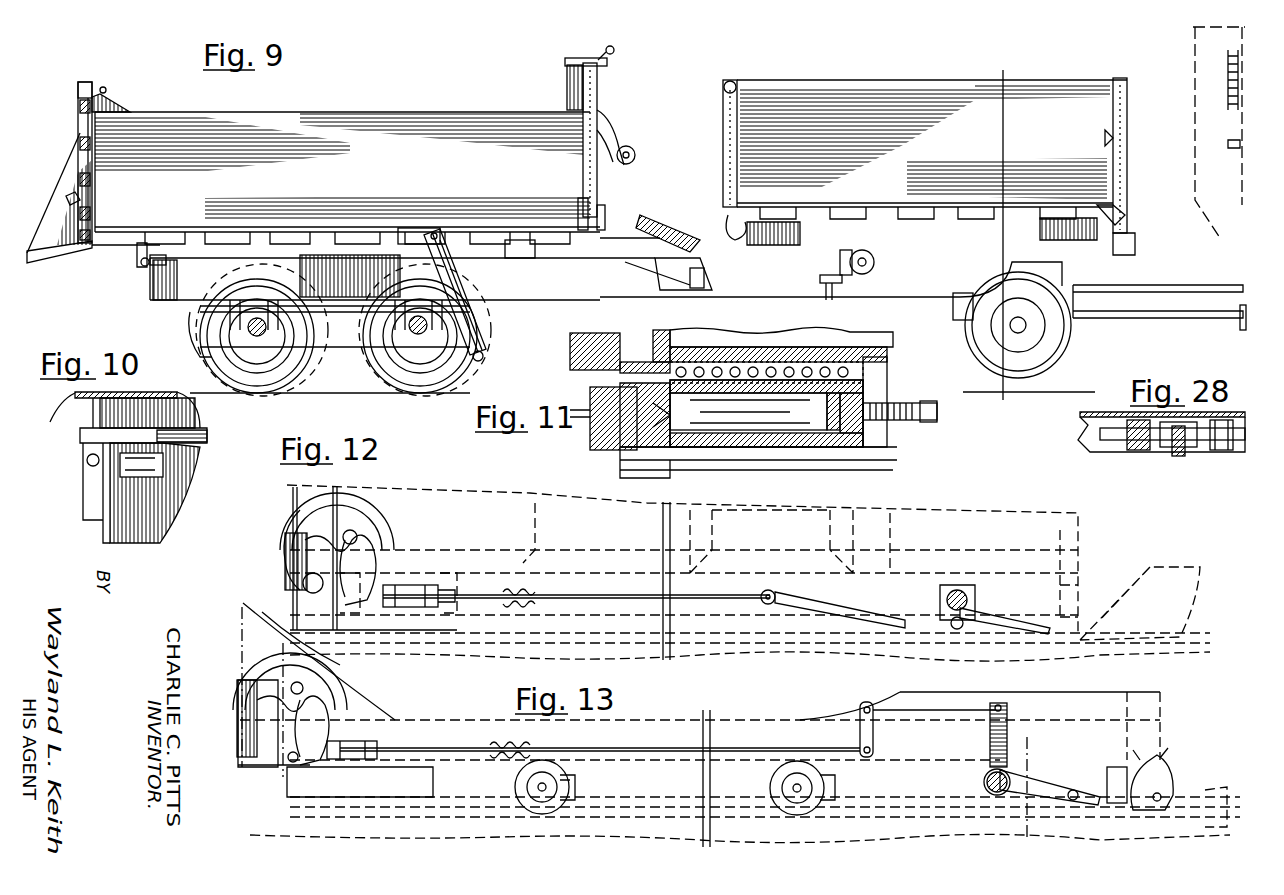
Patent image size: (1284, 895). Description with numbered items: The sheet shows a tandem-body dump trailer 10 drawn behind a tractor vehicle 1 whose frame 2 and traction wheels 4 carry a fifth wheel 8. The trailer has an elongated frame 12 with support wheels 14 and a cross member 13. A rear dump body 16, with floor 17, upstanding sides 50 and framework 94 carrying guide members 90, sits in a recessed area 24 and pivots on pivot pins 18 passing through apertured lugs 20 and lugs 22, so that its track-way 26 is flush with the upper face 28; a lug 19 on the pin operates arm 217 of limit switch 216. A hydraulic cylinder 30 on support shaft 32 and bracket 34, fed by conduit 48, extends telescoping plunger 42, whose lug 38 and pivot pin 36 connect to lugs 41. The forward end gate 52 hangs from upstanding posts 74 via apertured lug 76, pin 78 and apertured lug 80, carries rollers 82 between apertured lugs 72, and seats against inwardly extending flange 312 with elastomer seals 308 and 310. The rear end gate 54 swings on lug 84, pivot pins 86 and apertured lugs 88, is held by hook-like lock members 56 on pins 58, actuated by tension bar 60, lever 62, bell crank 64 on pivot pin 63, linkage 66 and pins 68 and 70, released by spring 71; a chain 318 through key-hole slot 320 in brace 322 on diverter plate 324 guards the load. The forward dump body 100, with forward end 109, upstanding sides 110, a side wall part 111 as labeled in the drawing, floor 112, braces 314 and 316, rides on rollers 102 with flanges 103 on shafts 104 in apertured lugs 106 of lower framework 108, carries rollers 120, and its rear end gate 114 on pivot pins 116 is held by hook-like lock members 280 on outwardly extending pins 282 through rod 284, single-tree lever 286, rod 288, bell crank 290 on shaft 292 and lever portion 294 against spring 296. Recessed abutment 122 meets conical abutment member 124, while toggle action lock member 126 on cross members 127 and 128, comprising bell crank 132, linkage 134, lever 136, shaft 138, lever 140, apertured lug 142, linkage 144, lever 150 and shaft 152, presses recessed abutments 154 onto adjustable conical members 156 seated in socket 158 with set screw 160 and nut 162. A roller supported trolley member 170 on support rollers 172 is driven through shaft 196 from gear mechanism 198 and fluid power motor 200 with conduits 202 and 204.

In FIG. 9, the tractor vehicle 1 is at (1190, 60).
In FIG. 9, the frame 2 is at (1178, 312).
In FIG. 9, the traction wheels 4 is at (975, 345).
In FIG. 9, the fifth wheel 8 is at (1050, 262).
In FIG. 9, the trailer 10 is at (787, 297).
In FIG. 10, the trailer 10 is at (173, 527).
In FIG. 12, the trailer 10 is at (1180, 565).
In FIG. 13, the trailer 10 is at (1187, 800).
In FIG. 9, the elongated frame 12 is at (603, 282).
In FIG. 10, the elongated frame 12 is at (153, 530).
In FIG. 12, the elongated frame 12 is at (1150, 648).
In FIG. 13, the elongated frame 12 is at (1085, 840).
In FIG. 9, the cross member 13 is at (1110, 225).
In FIG. 9, the support wheels 14 is at (372, 372).
In FIG. 9, the rear dump body 16 is at (497, 108).
In FIG. 10, the rear dump body 16 is at (203, 415).
In FIG. 12, the rear dump body 16 is at (1049, 514).
In FIG. 9, the floor 17 is at (185, 226).
In FIG. 10, the floor 17 is at (160, 395).
In FIG. 9, the pivot pins 18 is at (142, 263).
In FIG. 10, the pivot pins 18 is at (85, 459).
In FIG. 9, the lug 19 is at (144, 270).
In FIG. 10, the lug 19 is at (90, 468).
In FIG. 9, the apertured lugs 20 is at (138, 254).
In FIG. 10, the apertured lugs 20 is at (80, 443).
In FIG. 9, the lugs 22 is at (146, 280).
In FIG. 10, the lugs 22 is at (95, 475).
In FIG. 9, the recessed area 24 is at (320, 220).
In FIG. 12, the recessed area 24 is at (1050, 632).
In FIG. 9, the track-way 26 is at (640, 215).
In FIG. 12, the track-way 26 is at (1120, 565).
In FIG. 9, the upper face 28 is at (692, 226).
In FIG. 12, the upper face 28 is at (1205, 566).
In FIG. 13, the upper face 28 is at (1008, 742).
In FIG. 9, the hydraulic cylinder 30 is at (478, 322).
In FIG. 9, the support shaft 32 is at (481, 362).
In FIG. 9, the bracket 34 is at (488, 306).
In FIG. 9, the pivot pin 36 is at (455, 237).
In FIG. 9, the lug 38 is at (436, 232).
In FIG. 9, the lugs 41 is at (478, 258).
In FIG. 9, the telescoping plunger 42 is at (420, 228).
In FIG. 9, the conduit 48 is at (488, 342).
In FIG. 9, the upstanding sides 50 is at (386, 108).
In FIG. 12, the upstanding sides 50 is at (990, 513).
In FIG. 9, the forward end gate 52 is at (598, 86).
In FIG. 9, the rear end gate 54 is at (78, 136).
In FIG. 12, the rear end gate 54 is at (340, 482).
In FIG. 9, the hook-like lock members 56 is at (62, 232).
In FIG. 12, the hook-like lock members 56 is at (290, 560).
In FIG. 12, the pins 58 is at (305, 584).
In FIG. 12, the tension bar 60 is at (585, 596).
In FIG. 12, the lever 62 is at (990, 610).
In FIG. 12, the pivot pin 63 is at (950, 592).
In FIG. 12, the bell crank 64 is at (972, 598).
In FIG. 12, the linkage 66 is at (866, 600).
In FIG. 12, the pin 68 is at (772, 590).
In FIG. 12, the pin 70 is at (957, 632).
In FIG. 12, the spring 71 is at (507, 588).
In FIG. 9, the apertured lugs 72 is at (614, 130).
In FIG. 9, the upstanding posts 74 is at (567, 86).
In FIG. 9, the apertured lug 76 is at (578, 64).
In FIG. 9, the pin 78 is at (607, 66).
In FIG. 9, the apertured lug 80 is at (616, 48).
In FIG. 9, the rollers 82 is at (636, 154).
In FIG. 9, the lug 84 is at (92, 88).
In FIG. 9, the pivot pins 86 is at (106, 86).
In FIG. 9, the apertured lugs 88 is at (118, 102).
In FIG. 9, the guide members 90 is at (540, 255).
In FIG. 9, the framework 94 is at (366, 212).
In FIG. 10, the framework 94 is at (75, 404).
In FIG. 9, the forward dump body 100 is at (968, 85).
In FIG. 11, the forward dump body 100 is at (730, 337).
In FIG. 13, the forward dump body 100 is at (1120, 692).
In FIG. 9, the rollers 102 is at (885, 222).
In FIG. 13, the rollers 102 is at (590, 787).
In FIG. 13, the flanges 103 is at (520, 803).
In FIG. 9, the shafts 104 is at (815, 208).
In FIG. 13, the shafts 104 is at (535, 787).
In FIG. 9, the apertured lugs 106 is at (800, 206).
In FIG. 9, the lower framework 108 is at (950, 206).
In FIG. 11, the lower framework 108 is at (900, 440).
In FIG. 28, the lower framework 108 is at (1085, 431).
In FIG. 9, the forward end 109 is at (1105, 92).
In FIG. 9, the upstanding sides 110 is at (880, 88).
In FIG. 11, the upstanding sides 110 is at (885, 332).
In FIG. 13, the upstanding sides 110 is at (810, 720).
In FIG. 9, the side wall 111 is at (824, 86).
In FIG. 9, the floor 112 is at (1105, 200).
In FIG. 11, the floor 112 is at (885, 352).
In FIG. 9, the rear end gate 114 is at (728, 116).
In FIG. 11, the rear end gate 114 is at (612, 340).
In FIG. 13, the rear end gate 114 is at (243, 633).
In FIG. 9, the pivot pins 116 is at (737, 90).
In FIG. 9, the roller 120 is at (724, 84).
In FIG. 9, the recessed abutment 122 is at (1120, 216).
In FIG. 9, the conical abutment member 124 is at (1125, 236).
In FIG. 9, the toggle action lock member 126 is at (698, 230).
In FIG. 11, the toggle action lock member 126 is at (605, 462).
In FIG. 9, the cross member 127 is at (700, 298).
In FIG. 9, the cross member 128 is at (612, 300).
In FIG. 9, the bell crank 132 is at (705, 276).
In FIG. 9, the linkage 134 is at (672, 258).
In FIG. 9, the lever 136 is at (655, 272).
In FIG. 9, the shaft 138 is at (680, 296).
In FIG. 9, the lever 140 is at (680, 214).
In FIG. 9, the apertured lug 142 is at (705, 289).
In FIG. 9, the linkage 144 is at (705, 262).
In FIG. 9, the lever 150 is at (735, 225).
In FIG. 9, the shaft 152 is at (742, 208).
In FIG. 9, the recessed abutments 154 is at (745, 228).
In FIG. 11, the recessed abutments 154 is at (605, 442).
In FIG. 11, the adjustable conical members 156 is at (657, 450).
In FIG. 11, the socket 158 is at (805, 430).
In FIG. 11, the set screw 160 is at (938, 420).
In FIG. 11, the nut 162 is at (880, 400).
In FIG. 13, the roller supported trolley member 170 is at (1160, 760).
In FIG. 13, the support rollers 172 is at (1080, 780).
In FIG. 9, the shaft 196 is at (885, 258).
In FIG. 9, the gear mechanism 198 is at (822, 282).
In FIG. 9, the fluid power motor 200 is at (822, 288).
In FIG. 9, the conduit 202 is at (830, 292).
In FIG. 9, the conduit 204 is at (815, 300).
In FIG. 9, the limit switch 216 is at (168, 262).
In FIG. 10, the limit switch 216 is at (165, 466).
In FIG. 10, the arm 217 is at (137, 478).
In FIG. 13, the hook-like lock members 280 is at (245, 680).
In FIG. 13, the outwardly extending pins 282 is at (262, 735).
In FIG. 13, the rod 284 is at (432, 748).
In FIG. 13, the single-tree lever 286 is at (880, 727).
In FIG. 13, the rod 288 is at (1005, 708).
In FIG. 13, the bell crank 290 is at (1006, 725).
In FIG. 28, the shaft 292 is at (1100, 446).
In FIG. 13, the shaft 292 is at (988, 782).
In FIG. 28, the lever portion 294 is at (1183, 452).
In FIG. 13, the lever portion 294 is at (1040, 797).
In FIG. 13, the spring 296 is at (545, 740).
In FIG. 9, the elastomer seal 308 is at (583, 205).
In FIG. 9, the elastomer seal 310 is at (603, 210).
In FIG. 9, the inwardly extending flange 312 is at (604, 110).
In FIG. 9, the vertical braces 314 is at (1125, 132).
In FIG. 13, the vertical braces 314 is at (1150, 690).
In FIG. 9, the horizontal brace 316 is at (1108, 136).
In FIG. 9, the chain 318 is at (80, 190).
In FIG. 9, the key-hole slot 320 is at (70, 198).
In FIG. 9, the brace 322 is at (92, 210).
In FIG. 9, the diverter plate 324 is at (62, 262).